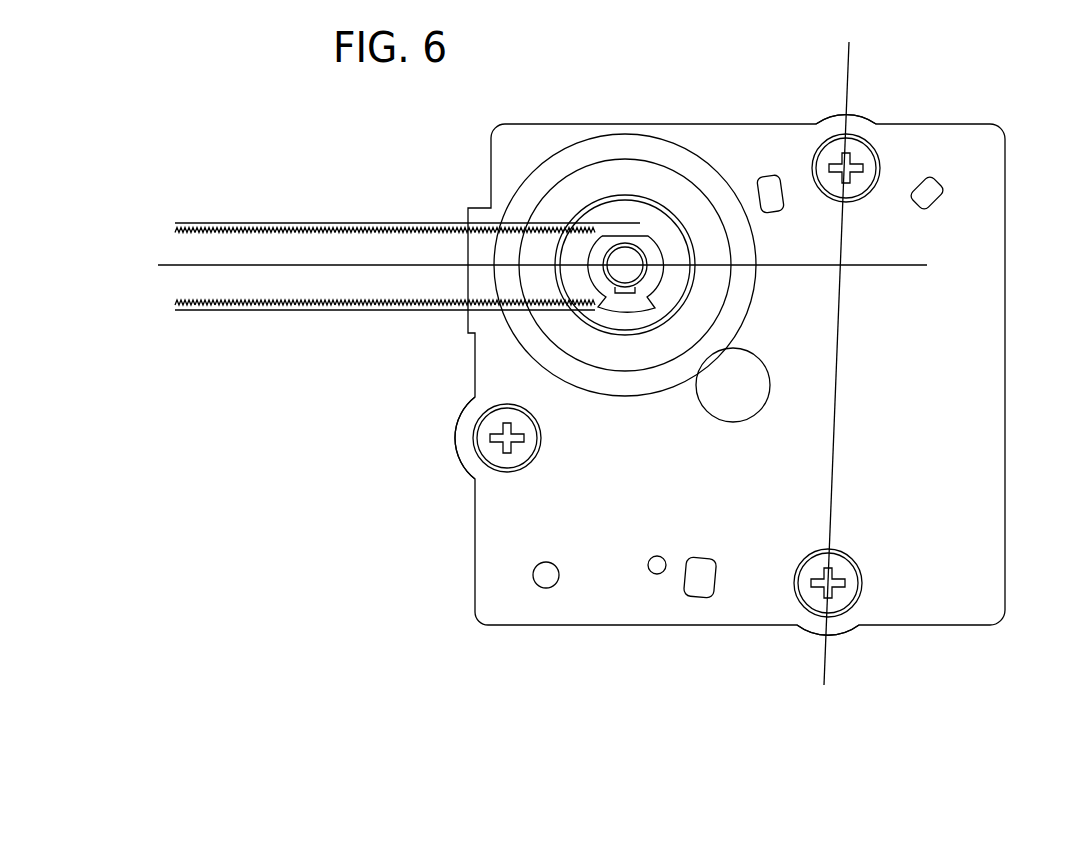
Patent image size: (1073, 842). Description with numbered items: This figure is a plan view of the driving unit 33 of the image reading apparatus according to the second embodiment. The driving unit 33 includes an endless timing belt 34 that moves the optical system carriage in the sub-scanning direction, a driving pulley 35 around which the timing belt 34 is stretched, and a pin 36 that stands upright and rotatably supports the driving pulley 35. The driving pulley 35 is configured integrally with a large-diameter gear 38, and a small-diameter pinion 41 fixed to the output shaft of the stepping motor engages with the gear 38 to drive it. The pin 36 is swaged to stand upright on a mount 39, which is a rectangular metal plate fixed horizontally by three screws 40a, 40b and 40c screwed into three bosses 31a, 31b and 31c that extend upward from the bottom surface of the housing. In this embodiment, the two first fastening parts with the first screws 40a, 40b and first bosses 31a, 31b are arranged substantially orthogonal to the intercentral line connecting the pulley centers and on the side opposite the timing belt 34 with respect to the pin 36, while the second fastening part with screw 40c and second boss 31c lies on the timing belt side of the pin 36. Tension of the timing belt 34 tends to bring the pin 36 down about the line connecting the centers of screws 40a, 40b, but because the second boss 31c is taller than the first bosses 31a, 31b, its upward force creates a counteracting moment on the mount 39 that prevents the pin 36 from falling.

The driving unit 33 is at (612, 364).
The timing belt 34 is at (320, 222).
The driving pulley 35 is at (633, 240).
The pin 36 is at (633, 272).
The gear 38 is at (632, 400).
The mount 39 is at (987, 527).
The first screw 40a is at (838, 148).
The first screw 40b is at (858, 592).
The screw 40c is at (510, 465).
The first boss 31a is at (862, 122).
The first boss 31b is at (838, 632).
The second boss 31c is at (462, 436).
The pinion 41 is at (752, 420).